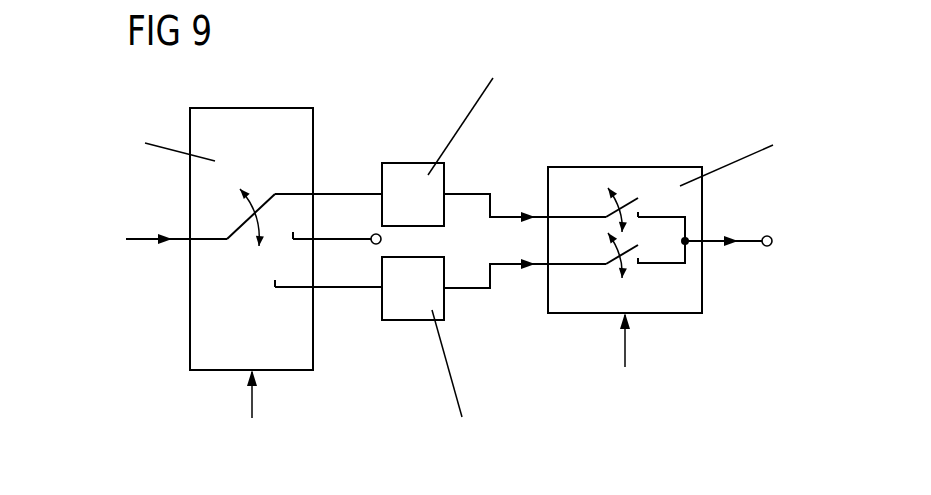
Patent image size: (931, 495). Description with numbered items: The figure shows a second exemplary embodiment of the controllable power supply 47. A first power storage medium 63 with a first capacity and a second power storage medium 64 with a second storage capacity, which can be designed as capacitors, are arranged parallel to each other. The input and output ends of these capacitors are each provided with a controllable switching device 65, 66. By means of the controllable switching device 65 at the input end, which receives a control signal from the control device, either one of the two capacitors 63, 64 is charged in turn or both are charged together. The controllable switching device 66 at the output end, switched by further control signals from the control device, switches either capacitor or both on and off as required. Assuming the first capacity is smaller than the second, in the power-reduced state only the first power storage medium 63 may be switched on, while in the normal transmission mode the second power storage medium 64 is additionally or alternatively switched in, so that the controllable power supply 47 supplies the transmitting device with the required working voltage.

The controllable power supply 47 is at (702, 128).
The controllable switching device 65 is at (252, 108).
The first power storage medium 63 is at (412, 163).
The second power storage medium 64 is at (412, 322).
The controllable switching device 66 is at (625, 167).